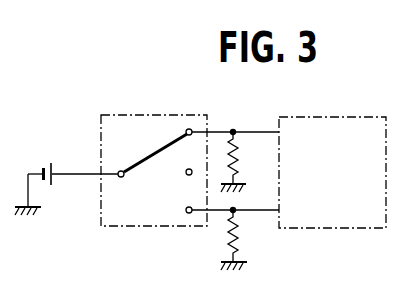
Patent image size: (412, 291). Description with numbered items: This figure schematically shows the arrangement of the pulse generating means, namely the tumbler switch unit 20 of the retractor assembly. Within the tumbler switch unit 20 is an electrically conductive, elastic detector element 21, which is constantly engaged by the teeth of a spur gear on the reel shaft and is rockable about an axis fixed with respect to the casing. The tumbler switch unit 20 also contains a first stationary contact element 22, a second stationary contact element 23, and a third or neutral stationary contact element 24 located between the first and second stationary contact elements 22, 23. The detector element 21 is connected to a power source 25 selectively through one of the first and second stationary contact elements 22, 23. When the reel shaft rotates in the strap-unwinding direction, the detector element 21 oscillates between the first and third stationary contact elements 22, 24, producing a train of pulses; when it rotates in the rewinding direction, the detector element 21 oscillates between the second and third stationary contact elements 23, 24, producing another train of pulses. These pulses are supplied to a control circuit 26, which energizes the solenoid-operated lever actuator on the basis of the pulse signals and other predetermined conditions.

The tumbler switch unit 20 is at (122, 228).
The detector element 21 is at (160, 153).
The first stationary contact element 22 is at (190, 128).
The second stationary contact element 23 is at (186, 210).
The third or neutral stationary contact element 24 is at (186, 172).
The power source 25 is at (49, 163).
The control circuit 26 is at (336, 116).